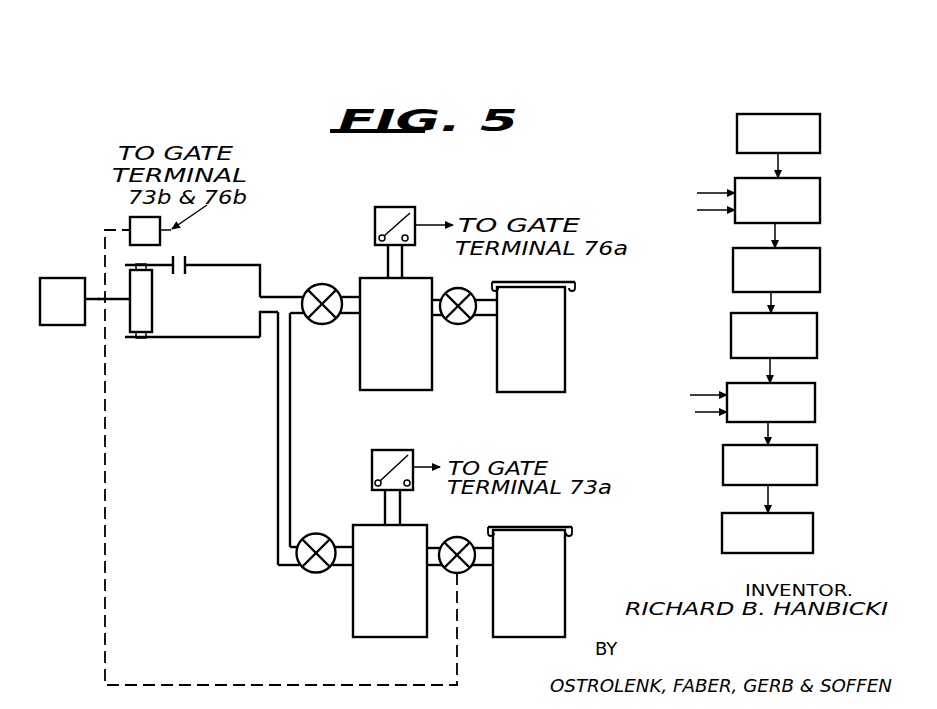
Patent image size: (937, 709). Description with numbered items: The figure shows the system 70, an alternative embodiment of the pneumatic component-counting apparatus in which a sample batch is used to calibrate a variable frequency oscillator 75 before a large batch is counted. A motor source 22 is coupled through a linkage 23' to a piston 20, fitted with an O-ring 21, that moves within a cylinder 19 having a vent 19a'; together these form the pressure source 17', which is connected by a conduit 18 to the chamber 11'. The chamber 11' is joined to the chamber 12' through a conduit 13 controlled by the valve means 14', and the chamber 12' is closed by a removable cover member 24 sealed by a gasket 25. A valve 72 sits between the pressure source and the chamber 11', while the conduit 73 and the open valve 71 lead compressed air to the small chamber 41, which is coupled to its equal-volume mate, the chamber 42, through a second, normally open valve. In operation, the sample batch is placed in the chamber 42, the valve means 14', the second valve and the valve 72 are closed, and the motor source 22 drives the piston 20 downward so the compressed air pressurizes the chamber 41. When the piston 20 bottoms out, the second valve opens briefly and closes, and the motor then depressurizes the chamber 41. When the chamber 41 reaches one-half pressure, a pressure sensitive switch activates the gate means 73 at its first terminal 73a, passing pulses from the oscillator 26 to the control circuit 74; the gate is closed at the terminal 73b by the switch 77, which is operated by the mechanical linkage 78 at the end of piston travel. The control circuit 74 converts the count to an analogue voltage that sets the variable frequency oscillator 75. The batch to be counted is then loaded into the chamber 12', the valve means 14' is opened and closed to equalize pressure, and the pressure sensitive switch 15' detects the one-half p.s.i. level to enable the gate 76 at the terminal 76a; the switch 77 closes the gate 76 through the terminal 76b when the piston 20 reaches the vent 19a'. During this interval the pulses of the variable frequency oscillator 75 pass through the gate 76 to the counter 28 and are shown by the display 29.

The system 70 is at (453, 179).
The motor source 22 is at (74, 313).
The linkage 23' is at (74, 337).
The piston 20 is at (153, 296).
The O-ring 21 is at (140, 340).
The pressure source 17' is at (201, 350).
The vent 19a' is at (213, 255).
The cylinder 19 is at (259, 264).
The conduit 18 is at (270, 296).
The valve 72 is at (325, 285).
The chamber 11' is at (372, 334).
The pressure sensitive switch 15' is at (386, 242).
The valve means 14' is at (464, 326).
The chamber 12' is at (562, 339).
The cover member 24 is at (547, 282).
The gasket 25 is at (571, 293).
The gate means 73 is at (276, 491).
The valve 71 is at (310, 575).
The chamber 41 is at (393, 638).
The chamber 42 is at (566, 572).
The switch 77 is at (130, 226).
The mechanical linkage 78 is at (107, 245).
The oscillator 26 is at (821, 140).
The conduit 13 is at (821, 211).
The first terminal 73a is at (696, 193).
The terminal 73b is at (696, 211).
The control circuit 74 is at (821, 278).
The variable frequency oscillator 75 is at (818, 343).
The gate 76 is at (816, 409).
The terminal 76a is at (687, 393).
The terminal 76b is at (687, 417).
The counter 28 is at (818, 478).
The display 29 is at (815, 543).